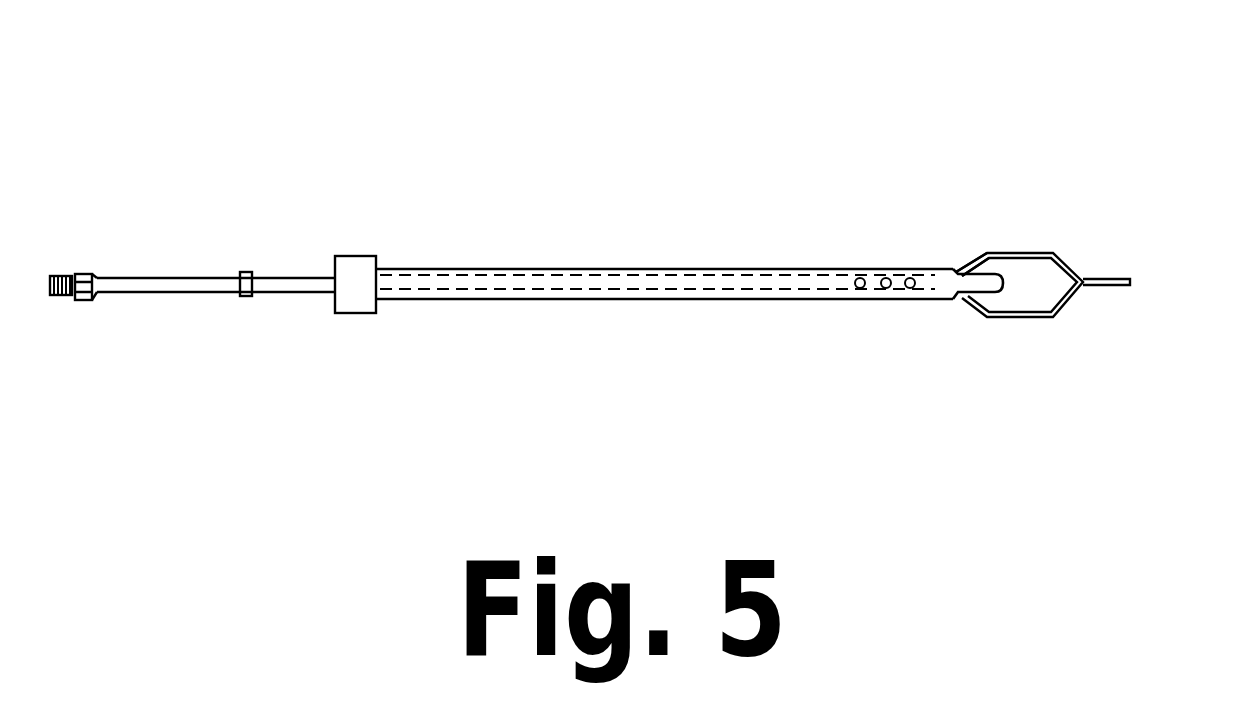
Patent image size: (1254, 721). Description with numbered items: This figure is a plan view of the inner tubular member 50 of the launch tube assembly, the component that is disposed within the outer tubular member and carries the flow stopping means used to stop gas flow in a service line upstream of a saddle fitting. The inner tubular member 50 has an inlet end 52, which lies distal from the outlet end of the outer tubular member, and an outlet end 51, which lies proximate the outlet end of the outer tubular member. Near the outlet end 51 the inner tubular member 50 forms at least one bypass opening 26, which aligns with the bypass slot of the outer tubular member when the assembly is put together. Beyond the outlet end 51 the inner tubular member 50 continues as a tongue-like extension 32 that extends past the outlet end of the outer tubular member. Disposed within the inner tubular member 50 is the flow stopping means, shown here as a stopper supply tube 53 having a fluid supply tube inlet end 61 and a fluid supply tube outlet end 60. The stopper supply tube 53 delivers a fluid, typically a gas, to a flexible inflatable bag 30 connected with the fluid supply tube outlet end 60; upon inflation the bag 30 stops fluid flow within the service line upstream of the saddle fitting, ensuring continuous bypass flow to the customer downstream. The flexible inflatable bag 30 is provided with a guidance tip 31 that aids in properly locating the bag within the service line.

The bypass opening 26 is at (912, 278).
The flexible inflatable bag 30 is at (1067, 257).
The guidance tip 31 is at (1107, 290).
The tongue-like extension 32 is at (985, 267).
The inner tubular member 50 is at (680, 300).
The outlet end 51 is at (943, 298).
The inlet end 52 is at (403, 300).
The stopper supply tube 53 is at (268, 283).
The fluid supply tube outlet end 60 is at (803, 297).
The fluid supply tube inlet end 61 is at (125, 278).